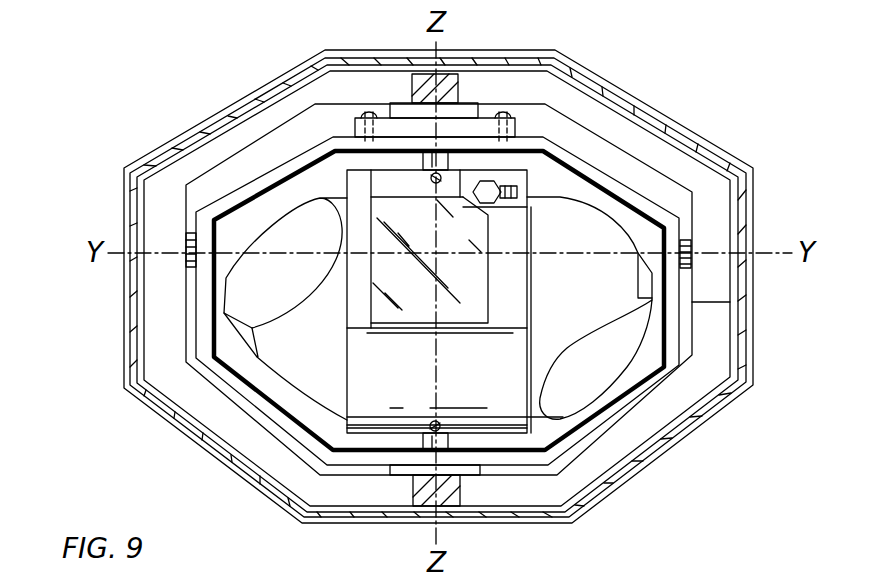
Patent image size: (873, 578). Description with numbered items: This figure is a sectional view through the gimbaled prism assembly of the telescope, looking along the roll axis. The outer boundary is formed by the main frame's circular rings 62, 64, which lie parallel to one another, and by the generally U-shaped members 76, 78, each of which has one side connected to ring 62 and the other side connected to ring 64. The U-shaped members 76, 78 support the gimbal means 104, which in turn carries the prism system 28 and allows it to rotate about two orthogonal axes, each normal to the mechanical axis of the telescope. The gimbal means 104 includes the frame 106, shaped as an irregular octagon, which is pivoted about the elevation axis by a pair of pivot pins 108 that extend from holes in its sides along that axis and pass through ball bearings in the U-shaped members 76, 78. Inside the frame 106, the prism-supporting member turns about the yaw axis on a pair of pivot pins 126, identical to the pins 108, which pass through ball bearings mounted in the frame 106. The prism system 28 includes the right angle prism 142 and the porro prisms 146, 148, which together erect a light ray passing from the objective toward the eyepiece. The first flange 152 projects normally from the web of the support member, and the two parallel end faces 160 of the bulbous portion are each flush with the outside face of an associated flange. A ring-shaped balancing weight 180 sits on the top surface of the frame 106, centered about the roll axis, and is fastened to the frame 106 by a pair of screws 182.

The prism system 28 is at (513, 434).
The circular ring 62 is at (473, 80).
The circular ring 64 is at (400, 495).
The U-shaped member 76 is at (715, 190).
The U-shaped member 78 is at (162, 172).
The gimbal means 104 is at (660, 208).
The frame 106 is at (610, 184).
The pivot pin 108 is at (688, 238).
The pivot pin 126 is at (426, 157).
The right angle prism 142 is at (462, 325).
The porro prism 146 is at (306, 403).
The porro prism 148 is at (608, 383).
The first flange 152 is at (366, 323).
The end face 160 is at (347, 362).
The balancing weight 180 is at (515, 120).
The screw 182 is at (522, 90).